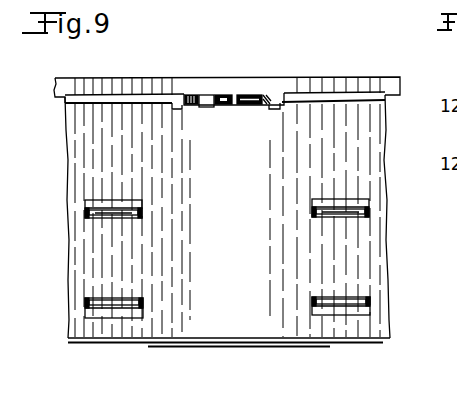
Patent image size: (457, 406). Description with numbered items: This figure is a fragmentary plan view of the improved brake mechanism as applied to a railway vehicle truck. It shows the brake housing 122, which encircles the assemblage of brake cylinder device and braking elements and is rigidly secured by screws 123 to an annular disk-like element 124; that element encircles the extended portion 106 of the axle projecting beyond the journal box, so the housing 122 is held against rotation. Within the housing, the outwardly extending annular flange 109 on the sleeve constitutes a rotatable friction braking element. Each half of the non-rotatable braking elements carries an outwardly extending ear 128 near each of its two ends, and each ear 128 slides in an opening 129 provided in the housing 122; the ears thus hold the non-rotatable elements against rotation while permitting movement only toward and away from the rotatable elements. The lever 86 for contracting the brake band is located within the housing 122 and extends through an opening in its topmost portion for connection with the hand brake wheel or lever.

The lever 86 is at (266, 106).
The extended portion of the axle 106 is at (207, 348).
The annular flange 109 is at (326, 348).
The brake housing 122 is at (374, 143).
The screws 123 is at (180, 110).
The annular disk-like element 124 is at (390, 84).
The ear 128 is at (117, 218).
The opening 129 is at (86, 205).